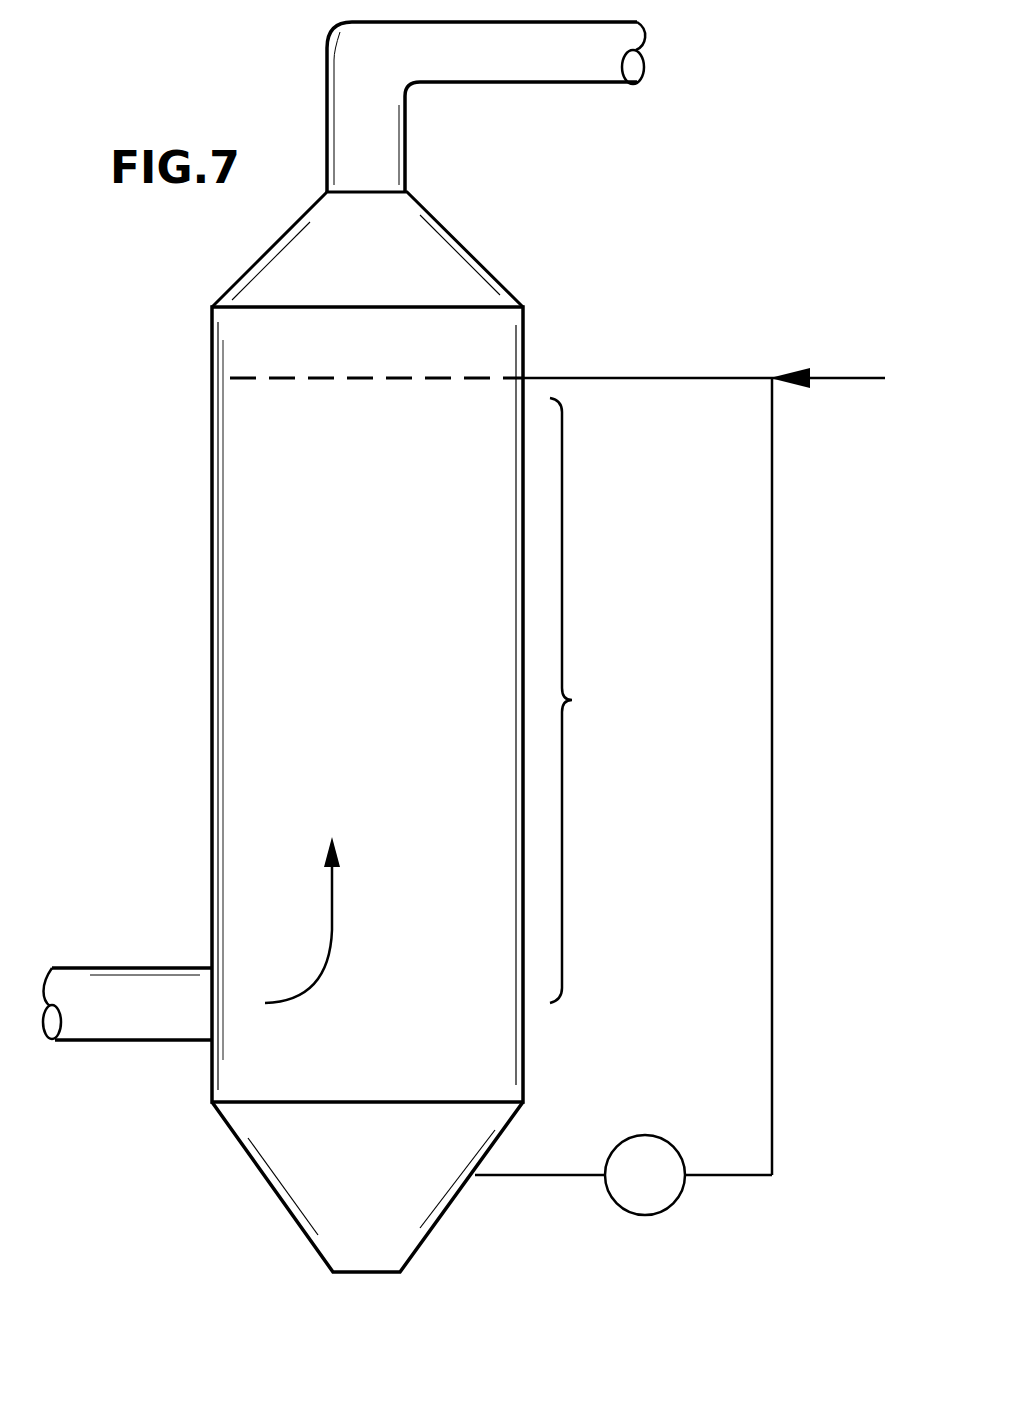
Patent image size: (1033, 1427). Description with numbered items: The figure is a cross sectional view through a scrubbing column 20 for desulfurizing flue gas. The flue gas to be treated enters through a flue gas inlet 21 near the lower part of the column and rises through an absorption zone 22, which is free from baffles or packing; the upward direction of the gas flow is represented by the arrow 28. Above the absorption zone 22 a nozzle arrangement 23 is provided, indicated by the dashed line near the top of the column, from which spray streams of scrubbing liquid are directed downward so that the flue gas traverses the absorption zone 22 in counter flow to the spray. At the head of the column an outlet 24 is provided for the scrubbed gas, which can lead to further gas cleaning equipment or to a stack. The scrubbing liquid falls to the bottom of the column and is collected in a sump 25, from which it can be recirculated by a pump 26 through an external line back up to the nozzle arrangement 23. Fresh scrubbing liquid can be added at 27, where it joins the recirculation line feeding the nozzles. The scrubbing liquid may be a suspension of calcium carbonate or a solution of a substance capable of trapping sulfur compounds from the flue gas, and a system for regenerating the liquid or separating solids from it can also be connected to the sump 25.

The scrubbing column 20 is at (225, 566).
The flue gas inlet 21 is at (130, 1013).
The absorption zone 22 is at (592, 700).
The nozzle arrangement 23 is at (467, 370).
The outlet 24 is at (570, 62).
The sump 25 is at (317, 1195).
The pump 26 is at (667, 1192).
The fresh scrubbing liquid addition point 27 is at (840, 378).
The arrow 28 is at (333, 918).